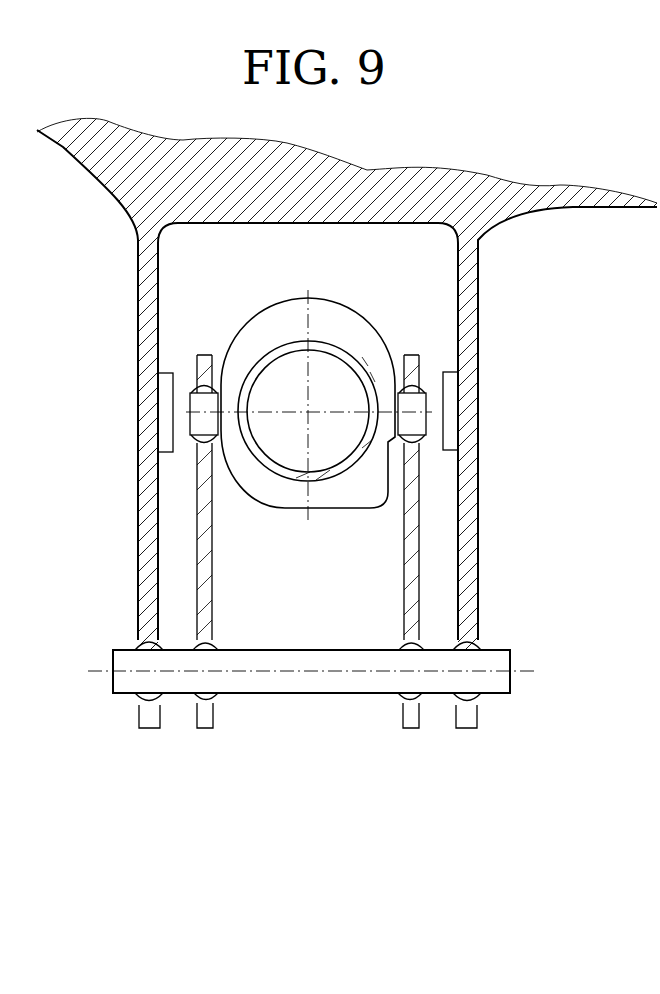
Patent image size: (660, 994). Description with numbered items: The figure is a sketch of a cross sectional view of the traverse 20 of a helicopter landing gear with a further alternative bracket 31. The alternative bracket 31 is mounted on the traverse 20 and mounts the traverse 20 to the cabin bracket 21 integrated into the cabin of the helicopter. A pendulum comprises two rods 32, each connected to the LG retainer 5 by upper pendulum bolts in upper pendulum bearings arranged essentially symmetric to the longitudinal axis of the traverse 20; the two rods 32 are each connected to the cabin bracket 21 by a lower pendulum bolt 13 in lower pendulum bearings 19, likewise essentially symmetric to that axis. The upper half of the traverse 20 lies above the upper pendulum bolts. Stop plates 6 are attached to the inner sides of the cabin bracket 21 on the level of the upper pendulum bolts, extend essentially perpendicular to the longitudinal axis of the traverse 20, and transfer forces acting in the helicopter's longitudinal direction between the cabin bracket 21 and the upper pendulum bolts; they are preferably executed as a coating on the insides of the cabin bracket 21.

The LG retainer 5 is at (282, 320).
The stop plates 6 is at (452, 432).
The lower pendulum bolt 13 is at (513, 662).
The lower pendulum bearings 19 is at (195, 695).
The traverse 20 is at (353, 380).
The cabin bracket 21 is at (148, 395).
The further alternative bracket 31 is at (397, 302).
The rods 32 is at (412, 558).